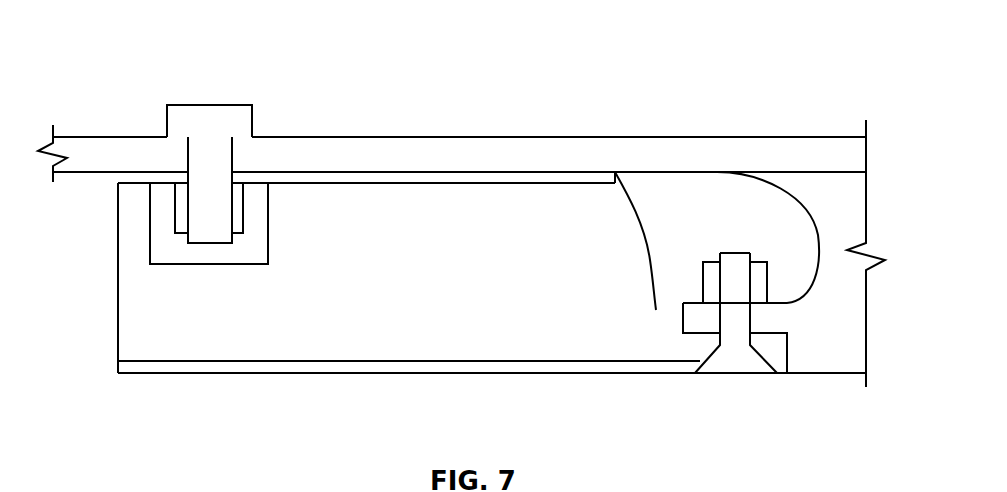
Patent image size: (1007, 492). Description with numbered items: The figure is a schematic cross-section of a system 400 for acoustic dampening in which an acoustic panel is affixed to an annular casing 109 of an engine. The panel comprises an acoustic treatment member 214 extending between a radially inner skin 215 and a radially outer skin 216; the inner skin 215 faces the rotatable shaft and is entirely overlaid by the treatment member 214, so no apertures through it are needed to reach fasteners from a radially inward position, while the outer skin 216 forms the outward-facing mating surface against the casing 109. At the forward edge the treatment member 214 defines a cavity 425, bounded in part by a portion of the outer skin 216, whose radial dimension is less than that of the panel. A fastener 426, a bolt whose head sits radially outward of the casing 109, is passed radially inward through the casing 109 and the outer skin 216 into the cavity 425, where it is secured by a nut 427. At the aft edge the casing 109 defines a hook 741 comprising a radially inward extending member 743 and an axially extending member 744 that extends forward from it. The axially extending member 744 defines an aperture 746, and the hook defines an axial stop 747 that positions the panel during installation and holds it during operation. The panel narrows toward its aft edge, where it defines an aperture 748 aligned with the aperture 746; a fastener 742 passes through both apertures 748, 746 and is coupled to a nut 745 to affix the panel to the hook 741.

The system 400 is at (122, 44).
The casing 109 is at (605, 155).
The hook 741 is at (818, 145).
The radially outer skin 216 is at (423, 180).
The acoustic treatment member 214 is at (143, 321).
The radially inner skin 215 is at (172, 368).
The cavity 425 is at (170, 247).
The fastener 426 is at (210, 115).
The nut 427 is at (238, 210).
The radially inward extending member 743 is at (812, 205).
The nut 745 is at (712, 282).
The axially extending member 744 is at (692, 313).
The aperture 746 is at (752, 320).
The axial stop 747 is at (787, 348).
The fastener 742 is at (732, 360).
The aperture 748 is at (715, 340).